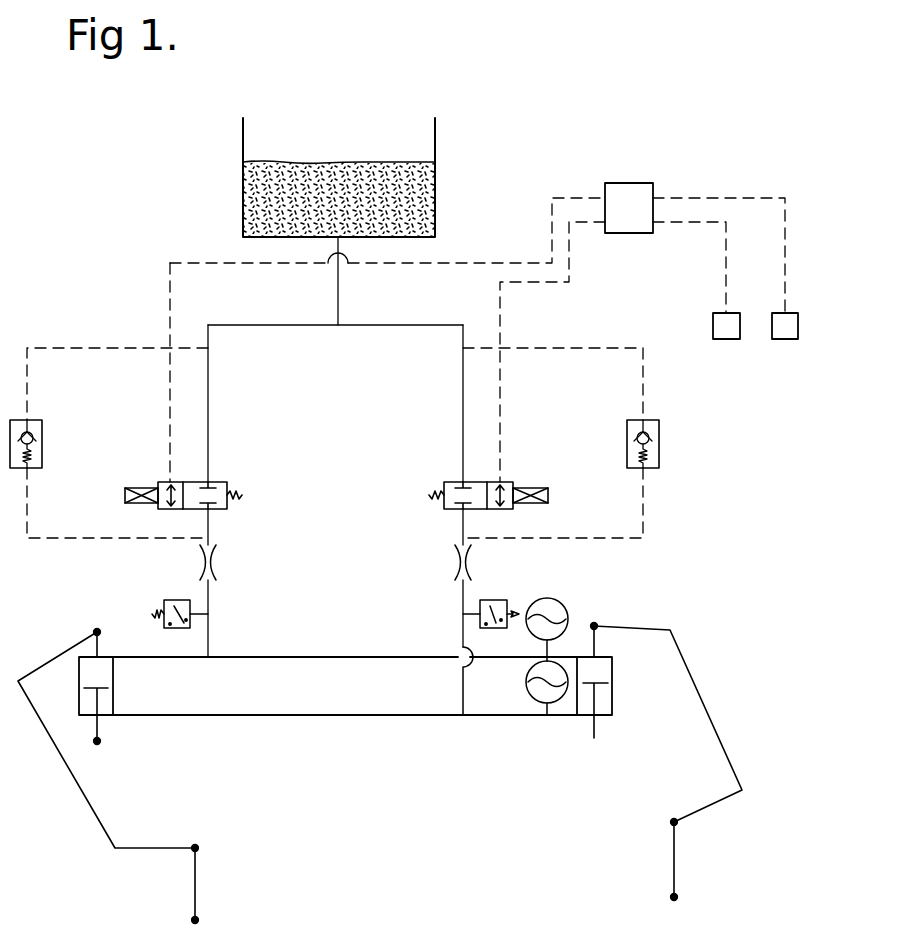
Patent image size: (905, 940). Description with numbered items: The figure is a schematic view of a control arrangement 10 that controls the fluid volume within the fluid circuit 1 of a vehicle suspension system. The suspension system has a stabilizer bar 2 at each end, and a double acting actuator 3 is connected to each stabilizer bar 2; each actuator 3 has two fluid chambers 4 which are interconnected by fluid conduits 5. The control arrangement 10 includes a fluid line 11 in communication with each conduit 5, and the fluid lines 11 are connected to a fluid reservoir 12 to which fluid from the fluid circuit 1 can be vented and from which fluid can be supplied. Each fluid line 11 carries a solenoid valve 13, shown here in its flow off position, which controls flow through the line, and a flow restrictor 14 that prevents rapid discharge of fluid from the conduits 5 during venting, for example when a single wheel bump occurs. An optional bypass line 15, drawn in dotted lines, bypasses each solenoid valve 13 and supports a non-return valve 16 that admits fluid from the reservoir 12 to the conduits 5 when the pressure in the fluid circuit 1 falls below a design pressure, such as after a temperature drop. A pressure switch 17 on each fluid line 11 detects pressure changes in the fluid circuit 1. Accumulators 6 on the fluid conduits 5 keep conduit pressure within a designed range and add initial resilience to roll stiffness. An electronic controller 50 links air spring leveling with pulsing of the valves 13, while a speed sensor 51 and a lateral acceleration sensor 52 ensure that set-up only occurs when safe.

The fluid circuit 1 is at (344, 744).
The stabilizer bar 2 is at (707, 720).
The double acting actuator 3 is at (106, 718).
The fluid chamber 4 is at (92, 673).
The fluid conduit 5 is at (310, 656).
The accumulator 6 is at (566, 608).
The control arrangement 10 is at (203, 308).
The fluid line 11 is at (210, 402).
The fluid reservoir 12 is at (437, 202).
The solenoid valve 13 is at (218, 482).
The flow restrictor 14 is at (200, 571).
The bypass line 15 is at (97, 348).
The non-return valve 16 is at (44, 443).
The pressure switch 17 is at (164, 604).
The electronic controller 50 is at (629, 183).
The speed sensor 51 is at (727, 340).
The lateral acceleration sensor 52 is at (787, 340).